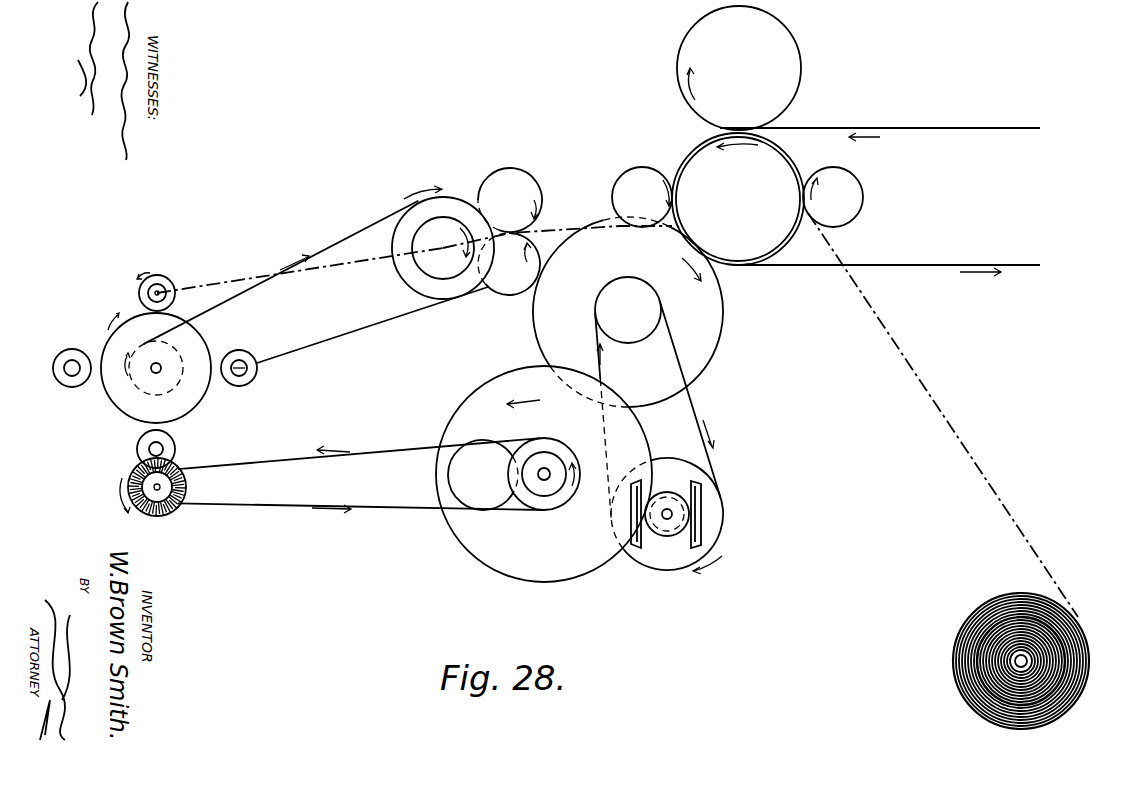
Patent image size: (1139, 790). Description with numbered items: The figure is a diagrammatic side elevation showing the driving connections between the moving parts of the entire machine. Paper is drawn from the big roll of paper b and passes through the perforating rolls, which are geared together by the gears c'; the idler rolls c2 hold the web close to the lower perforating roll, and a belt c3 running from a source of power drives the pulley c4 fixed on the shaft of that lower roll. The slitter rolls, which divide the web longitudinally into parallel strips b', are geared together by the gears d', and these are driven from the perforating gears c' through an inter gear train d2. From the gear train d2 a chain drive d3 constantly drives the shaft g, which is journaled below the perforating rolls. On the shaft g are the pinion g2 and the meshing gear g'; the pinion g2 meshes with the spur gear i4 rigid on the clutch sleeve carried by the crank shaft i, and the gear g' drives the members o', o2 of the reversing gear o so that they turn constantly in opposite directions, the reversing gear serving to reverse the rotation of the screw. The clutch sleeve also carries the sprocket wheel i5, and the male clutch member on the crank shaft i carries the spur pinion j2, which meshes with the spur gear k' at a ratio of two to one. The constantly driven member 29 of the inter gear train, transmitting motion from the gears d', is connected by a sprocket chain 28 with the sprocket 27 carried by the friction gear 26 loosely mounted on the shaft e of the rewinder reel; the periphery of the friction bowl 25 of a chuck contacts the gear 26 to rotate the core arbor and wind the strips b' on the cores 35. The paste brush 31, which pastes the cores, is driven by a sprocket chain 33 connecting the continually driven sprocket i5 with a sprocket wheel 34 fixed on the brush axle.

The friction bowl 25 is at (171, 282).
The cores 35 is at (166, 293).
The friction gear 26 is at (196, 410).
The sprocket 27 is at (181, 356).
The shaft e is at (152, 373).
The sprocket chain 28 is at (269, 281).
The paper strips b' is at (300, 274).
The constantly driven member 29 is at (413, 220).
The big roll of paper b is at (608, 465).
The slitter roll gears d' is at (519, 240).
The inter gear train d2 is at (723, 318).
The chain drive d3 is at (690, 394).
The perforating roll gears c' is at (759, 135).
The idler rolls c2 is at (630, 172).
The belt c3 is at (999, 128).
The pulley c4 is at (772, 259).
The spur gear i4 is at (481, 562).
The sprocket wheel i5 is at (551, 439).
The crank shaft i is at (541, 480).
The spur pinion j2 is at (551, 497).
The spur gear k' is at (460, 497).
The sprocket chain 33 is at (324, 471).
The sprocket wheel 34 is at (188, 487).
The paste brush 31 is at (160, 517).
The shaft g is at (628, 571).
The meshing gear g' is at (667, 559).
The pinion g2 is at (668, 496).
The reversing gear o is at (680, 516).
The reversing gear member o' is at (621, 535).
The reversing gear member o2 is at (703, 492).